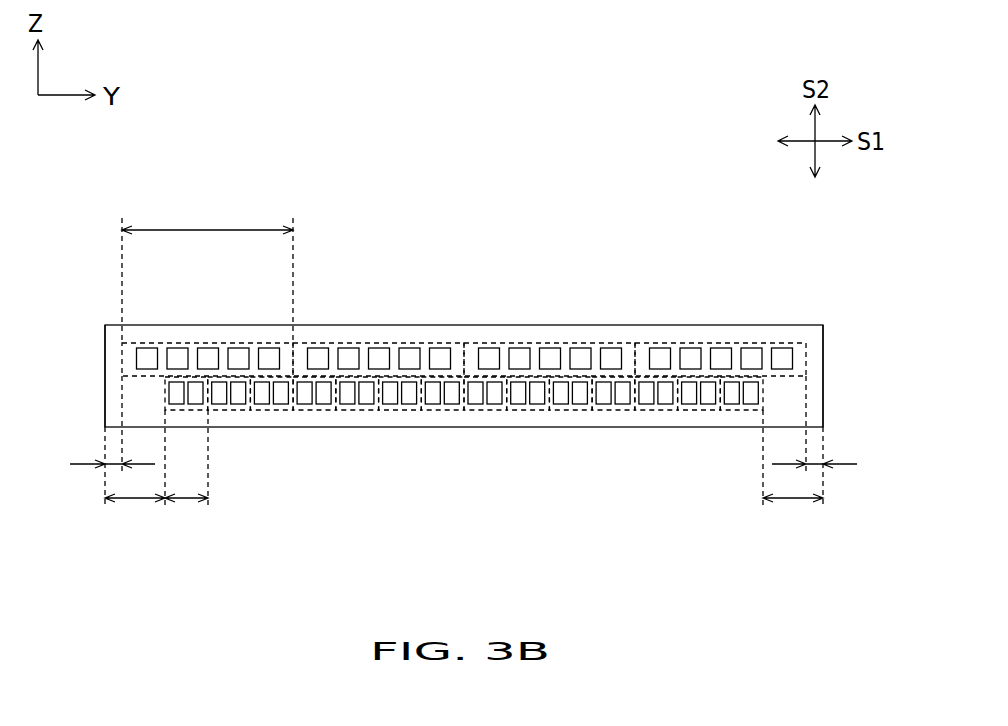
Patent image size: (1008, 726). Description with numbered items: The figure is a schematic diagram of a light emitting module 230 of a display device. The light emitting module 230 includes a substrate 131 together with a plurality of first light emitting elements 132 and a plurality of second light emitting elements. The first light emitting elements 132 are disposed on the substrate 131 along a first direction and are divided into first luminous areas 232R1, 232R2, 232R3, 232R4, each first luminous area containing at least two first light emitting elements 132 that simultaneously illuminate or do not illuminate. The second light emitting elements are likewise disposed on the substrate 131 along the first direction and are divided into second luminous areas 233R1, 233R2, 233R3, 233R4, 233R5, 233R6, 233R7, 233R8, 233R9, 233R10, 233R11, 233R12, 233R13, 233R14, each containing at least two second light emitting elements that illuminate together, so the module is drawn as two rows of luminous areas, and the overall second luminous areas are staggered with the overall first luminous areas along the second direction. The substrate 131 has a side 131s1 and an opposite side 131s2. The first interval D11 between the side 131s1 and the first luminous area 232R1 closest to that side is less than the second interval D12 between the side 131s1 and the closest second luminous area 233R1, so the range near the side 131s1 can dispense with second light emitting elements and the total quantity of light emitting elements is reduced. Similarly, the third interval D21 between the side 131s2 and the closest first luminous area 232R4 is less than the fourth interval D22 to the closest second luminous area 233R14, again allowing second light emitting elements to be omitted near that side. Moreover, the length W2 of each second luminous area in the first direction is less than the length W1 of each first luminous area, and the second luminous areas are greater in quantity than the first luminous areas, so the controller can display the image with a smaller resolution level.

The light emitting module 230 is at (127, 185).
The substrate 131 is at (105, 355).
The side 131s1 is at (105, 399).
The side 131s2 is at (857, 358).
The first light emitting elements 132 is at (178, 348).
The first luminous area 232R1 is at (250, 343).
The first luminous area 232R2 is at (421, 343).
The first luminous area 232R3 is at (592, 343).
The first luminous area 232R4 is at (763, 343).
The second luminous area 233R1 is at (182, 410).
The second luminous area 233R2 is at (222, 410).
The second luminous area 233R3 is at (268, 410).
The second luminous area 233R4 is at (308, 410).
The second luminous area 233R5 is at (354, 410).
The second luminous area 233R6 is at (395, 410).
The second luminous area 233R7 is at (440, 410).
The second luminous area 233R8 is at (482, 410).
The second luminous area 233R9 is at (525, 410).
The second luminous area 233R10 is at (568, 410).
The second luminous area 233R11 is at (612, 410).
The second luminous area 233R12 is at (652, 410).
The second luminous area 233R13 is at (700, 410).
The second luminous area 233R14 is at (742, 410).
The length of first luminous area W1 is at (207, 271).
The length of second luminous area W2 is at (187, 496).
The first interval D11 is at (118, 460).
The second interval D12 is at (135, 515).
The third interval D21 is at (811, 460).
The fourth interval D22 is at (793, 473).